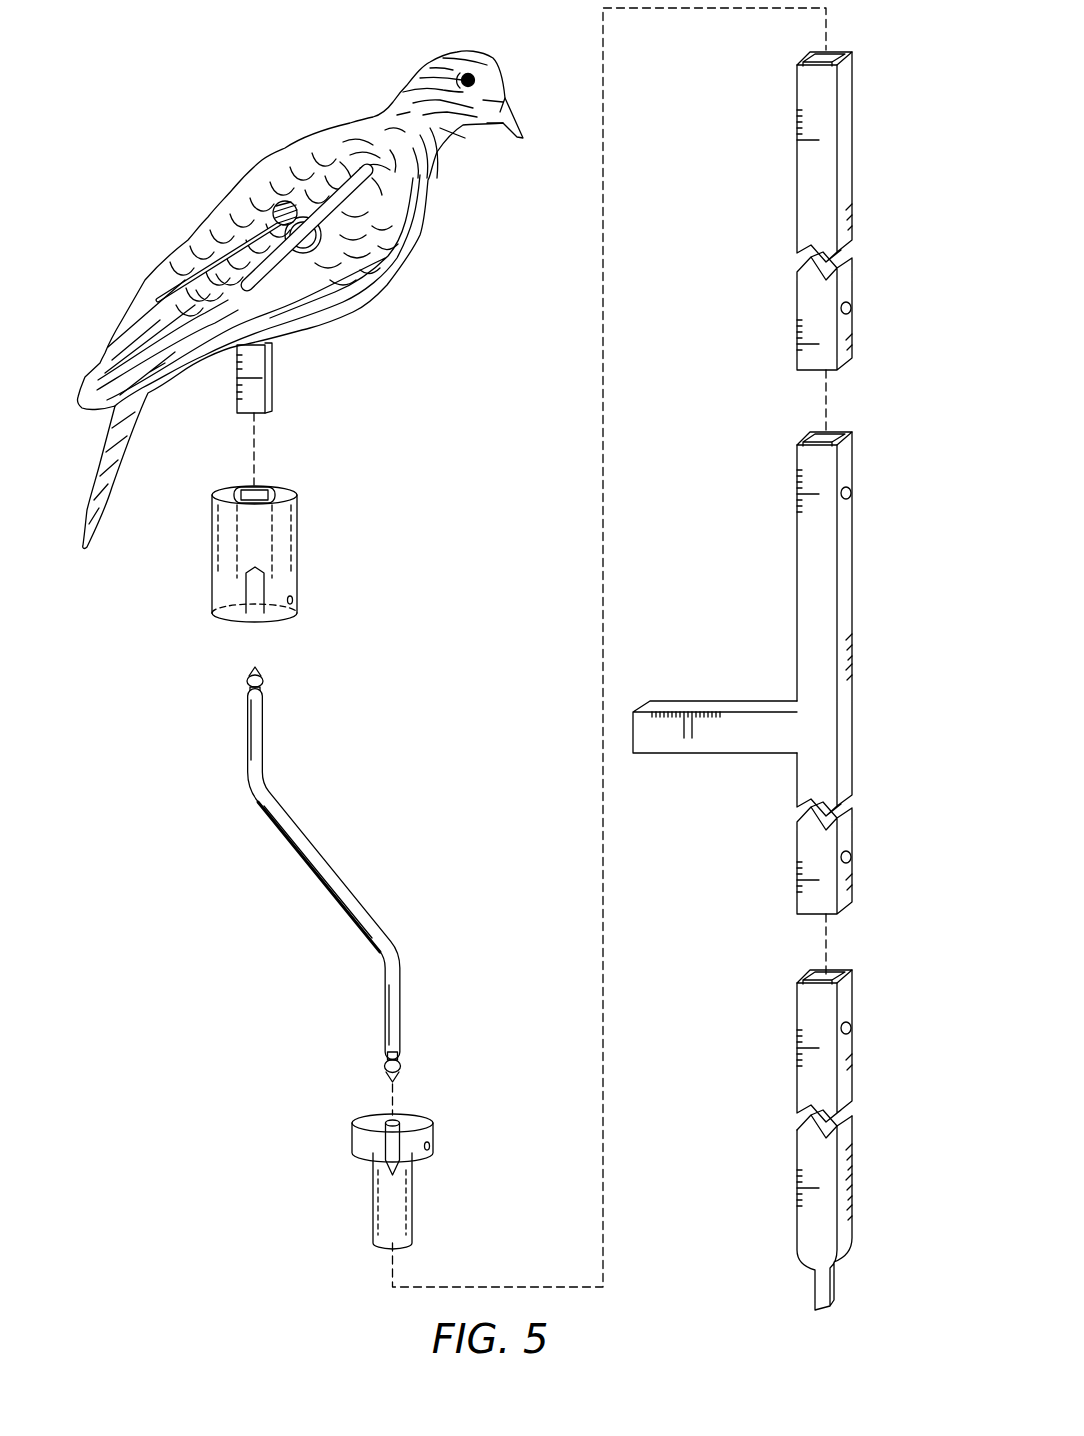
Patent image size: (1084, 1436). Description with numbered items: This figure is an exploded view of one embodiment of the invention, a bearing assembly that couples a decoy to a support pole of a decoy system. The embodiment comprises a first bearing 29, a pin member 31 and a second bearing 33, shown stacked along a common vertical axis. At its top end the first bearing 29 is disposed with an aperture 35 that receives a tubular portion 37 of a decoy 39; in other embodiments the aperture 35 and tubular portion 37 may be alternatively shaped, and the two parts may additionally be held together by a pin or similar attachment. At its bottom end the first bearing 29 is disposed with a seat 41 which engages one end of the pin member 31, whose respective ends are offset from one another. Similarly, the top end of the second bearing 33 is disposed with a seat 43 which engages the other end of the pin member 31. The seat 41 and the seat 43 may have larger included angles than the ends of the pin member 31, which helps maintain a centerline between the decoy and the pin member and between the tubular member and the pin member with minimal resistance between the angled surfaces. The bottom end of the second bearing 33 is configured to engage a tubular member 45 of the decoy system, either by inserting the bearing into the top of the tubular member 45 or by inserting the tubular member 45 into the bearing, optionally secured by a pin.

The first bearing 29 is at (297, 543).
The pin member 31 is at (332, 865).
The second bearing 33 is at (433, 1137).
The aperture 35 is at (263, 485).
The tubular portion 37 is at (275, 388).
The decoy 39 is at (293, 143).
The seat 41 is at (250, 622).
The seat 43 is at (395, 1118).
The tubular member 45 is at (854, 165).